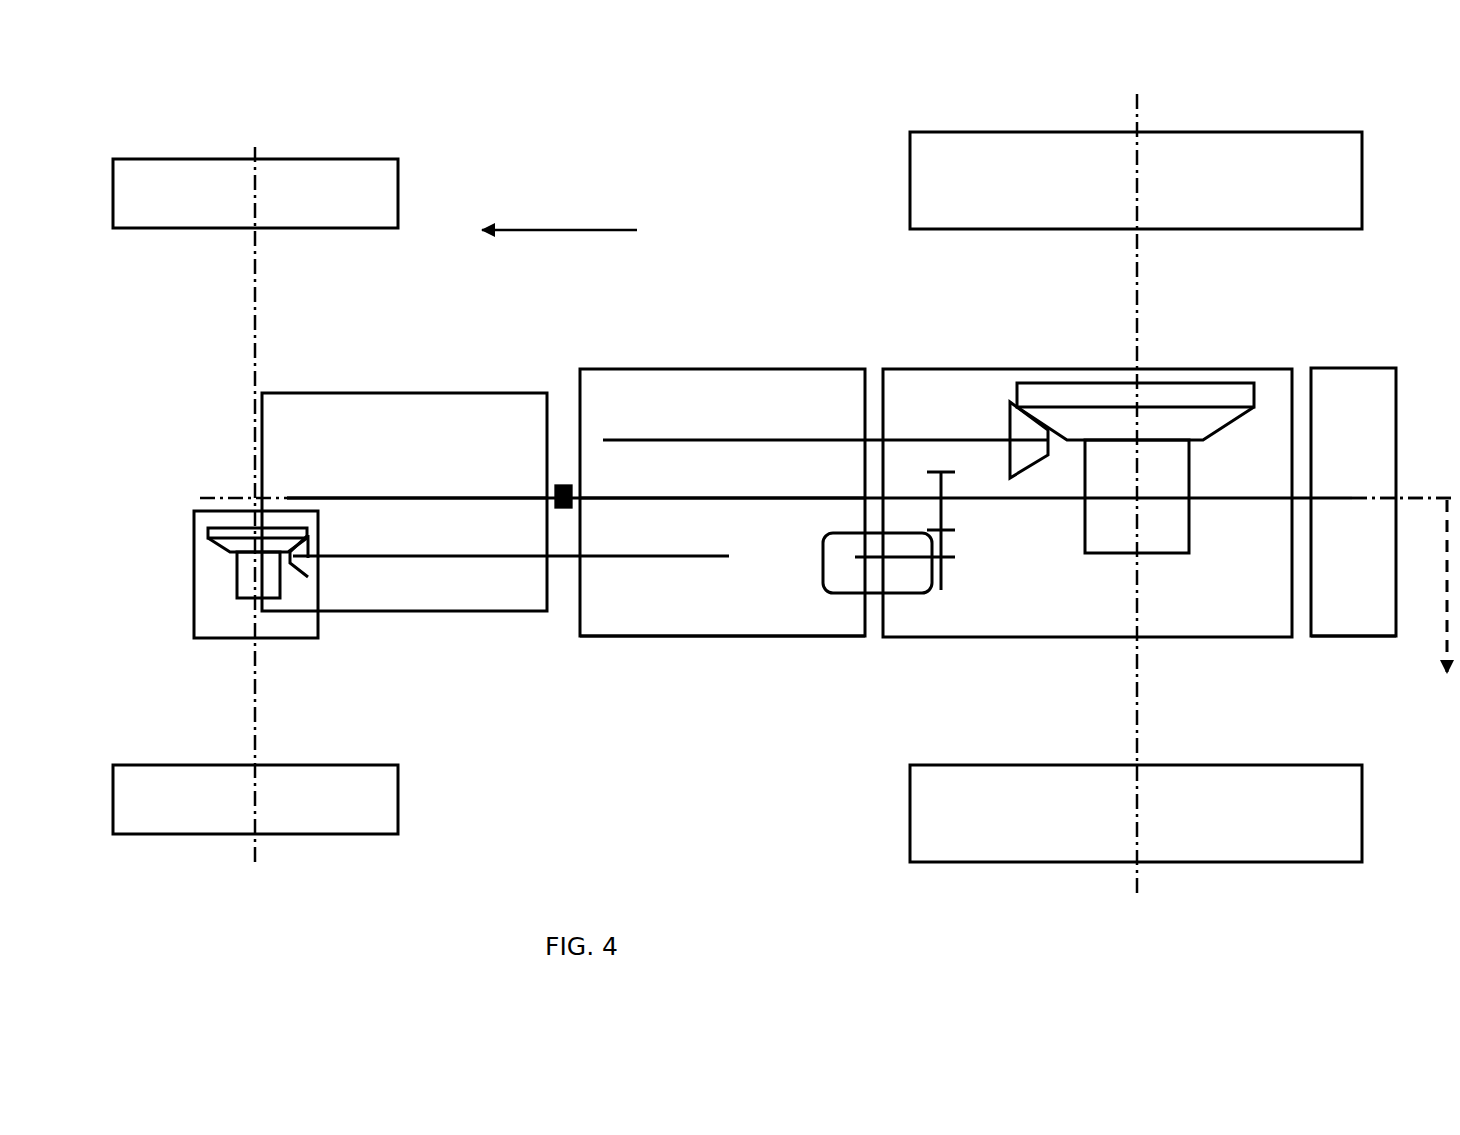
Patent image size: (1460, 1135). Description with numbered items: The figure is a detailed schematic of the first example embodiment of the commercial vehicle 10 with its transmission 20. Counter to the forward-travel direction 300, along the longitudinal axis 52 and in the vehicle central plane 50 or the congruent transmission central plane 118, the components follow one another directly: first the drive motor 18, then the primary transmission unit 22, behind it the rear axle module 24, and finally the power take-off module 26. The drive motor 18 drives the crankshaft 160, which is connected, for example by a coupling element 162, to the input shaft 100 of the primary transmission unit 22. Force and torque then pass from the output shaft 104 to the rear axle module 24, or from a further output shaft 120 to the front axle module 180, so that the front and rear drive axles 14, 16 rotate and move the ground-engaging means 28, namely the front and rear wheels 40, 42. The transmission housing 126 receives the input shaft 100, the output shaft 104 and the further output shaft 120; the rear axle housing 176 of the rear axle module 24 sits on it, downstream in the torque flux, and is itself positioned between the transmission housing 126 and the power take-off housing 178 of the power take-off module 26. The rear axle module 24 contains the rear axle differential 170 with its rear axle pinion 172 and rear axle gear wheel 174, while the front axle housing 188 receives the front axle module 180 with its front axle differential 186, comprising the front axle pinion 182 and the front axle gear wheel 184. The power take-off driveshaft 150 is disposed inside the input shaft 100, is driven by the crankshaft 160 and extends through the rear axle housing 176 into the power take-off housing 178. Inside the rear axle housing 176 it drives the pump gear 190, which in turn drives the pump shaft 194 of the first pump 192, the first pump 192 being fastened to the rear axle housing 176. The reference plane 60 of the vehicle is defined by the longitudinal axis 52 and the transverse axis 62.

The commercial vehicle 10 is at (538, 162).
The front drive axle 14 is at (257, 147).
The rear drive axle 16 is at (1140, 110).
The drive motor 18 is at (298, 393).
The transmission 20 is at (840, 242).
The primary transmission unit 22 is at (812, 370).
The rear axle module 24 is at (1248, 368).
The power take-off module 26 is at (1340, 368).
The ground-engaging means 28 is at (307, 159).
The rear wheels 40 is at (1307, 132).
The front wheels 42 is at (284, 467).
The vehicle central plane 50 is at (201, 495).
The longitudinal axis 52 is at (775, 427).
The reference plane 60 is at (1447, 510).
The transverse axis 62 is at (1446, 545).
The input shaft 100 is at (754, 498).
The output shaft 104 is at (660, 440).
The transmission central plane 118 is at (775, 427).
The further output shaft 120 is at (632, 556).
The transmission housing 126 is at (757, 640).
The power take-off driveshaft 150 is at (722, 406).
The crankshaft 160 is at (447, 498).
The coupling element 162 is at (562, 485).
The rear axle differential 170 is at (1095, 567).
The rear axle pinion 172 is at (1030, 428).
The rear axle gear wheel 174 is at (1082, 395).
The rear axle housing 176 is at (1248, 640).
The power take-off housing 178 is at (1355, 638).
The front axle module 180 is at (283, 622).
The front axle pinion 182 is at (305, 565).
The front axle gear wheel 184 is at (247, 579).
The front axle differential 186 is at (192, 540).
The front axle housing 188 is at (228, 643).
The pump gear 190 is at (958, 575).
The first pump 192 is at (873, 580).
The pump shaft 194 is at (903, 560).
The forward-travel direction 300 is at (605, 230).